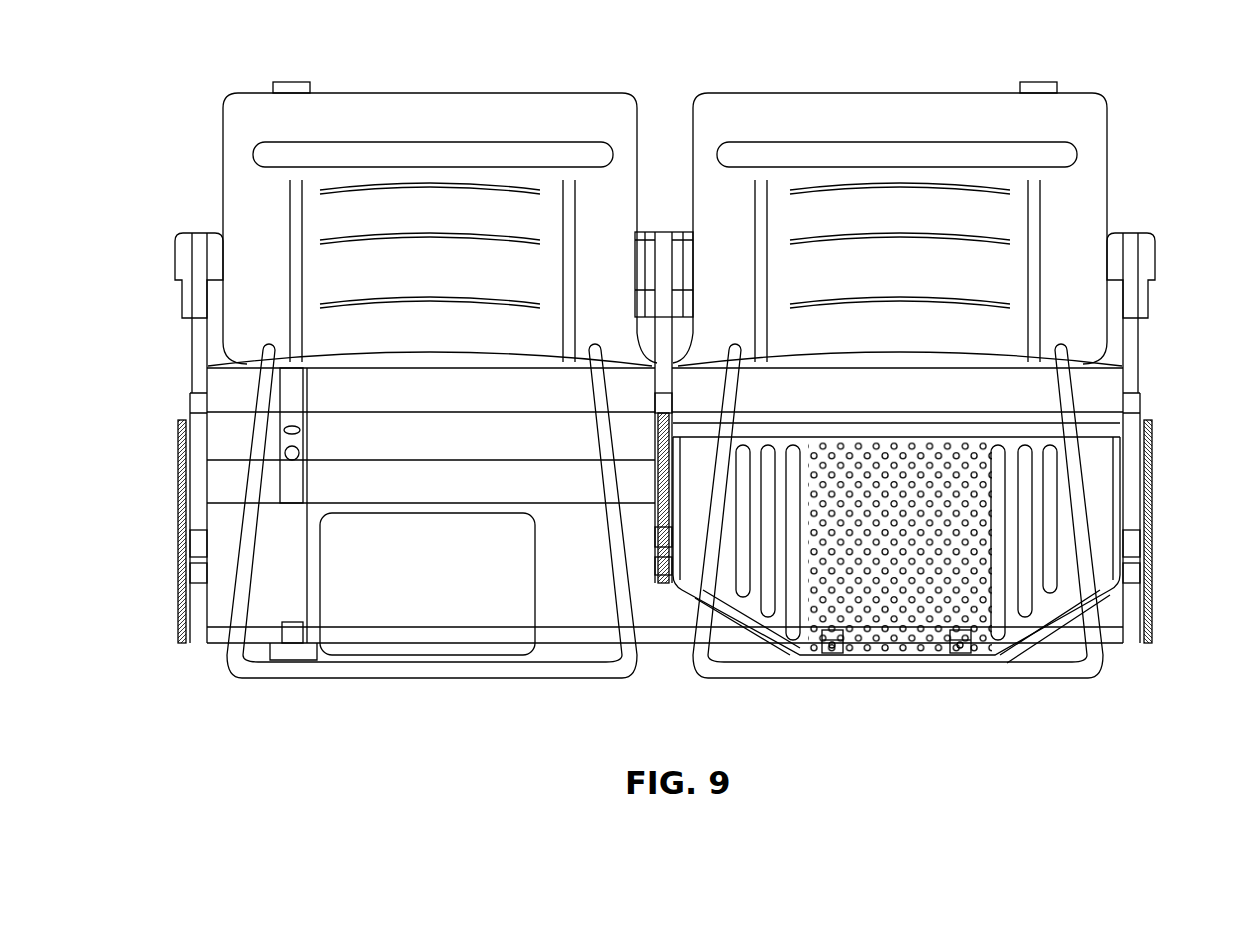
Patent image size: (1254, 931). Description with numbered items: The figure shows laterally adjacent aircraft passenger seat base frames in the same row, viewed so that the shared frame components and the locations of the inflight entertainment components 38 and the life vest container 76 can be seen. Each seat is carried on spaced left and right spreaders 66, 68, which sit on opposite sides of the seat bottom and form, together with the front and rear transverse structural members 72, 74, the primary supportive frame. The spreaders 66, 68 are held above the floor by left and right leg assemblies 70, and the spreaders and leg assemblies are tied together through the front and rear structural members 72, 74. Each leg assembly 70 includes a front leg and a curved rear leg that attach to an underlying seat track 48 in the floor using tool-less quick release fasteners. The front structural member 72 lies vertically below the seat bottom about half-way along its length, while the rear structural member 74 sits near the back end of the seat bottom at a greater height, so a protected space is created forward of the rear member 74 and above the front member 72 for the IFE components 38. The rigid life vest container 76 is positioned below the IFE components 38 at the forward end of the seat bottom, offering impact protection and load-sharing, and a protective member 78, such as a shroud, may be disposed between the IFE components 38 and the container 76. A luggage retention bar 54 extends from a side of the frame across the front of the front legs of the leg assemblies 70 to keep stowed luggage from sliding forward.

The seat track 48 is at (295, 82).
The left spreader 66 is at (180, 428).
The right spreader 68 is at (1130, 423).
The luggage retention bar 54 is at (222, 645).
The leg assembly 70 is at (297, 660).
The front transverse structural member 72 is at (560, 485).
The rear transverse structural member 74 is at (575, 393).
The life vest container 76 is at (380, 625).
The inflight entertainment (IFE) components 38 is at (920, 650).
The protective member 78 is at (1018, 625).